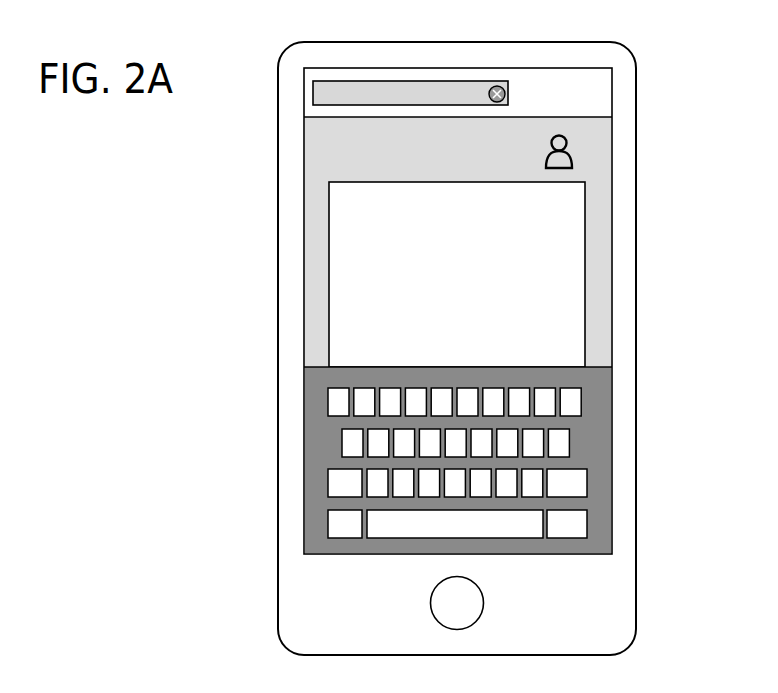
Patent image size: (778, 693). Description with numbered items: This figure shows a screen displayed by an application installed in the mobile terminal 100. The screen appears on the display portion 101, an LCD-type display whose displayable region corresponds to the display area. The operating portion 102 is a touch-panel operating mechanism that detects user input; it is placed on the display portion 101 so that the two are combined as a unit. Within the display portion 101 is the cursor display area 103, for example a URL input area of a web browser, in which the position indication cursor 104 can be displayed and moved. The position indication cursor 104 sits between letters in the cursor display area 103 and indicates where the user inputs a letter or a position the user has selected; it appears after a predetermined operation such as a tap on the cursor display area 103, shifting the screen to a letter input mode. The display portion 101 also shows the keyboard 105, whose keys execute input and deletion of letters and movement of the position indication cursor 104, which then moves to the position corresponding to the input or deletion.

The mobile terminal 100 is at (636, 300).
The display portion 101 is at (612, 253).
The operating portion 102 is at (612, 405).
The cursor display area 103 is at (338, 81).
The position indication cursor 104 is at (408, 102).
The keyboard 105 is at (575, 460).